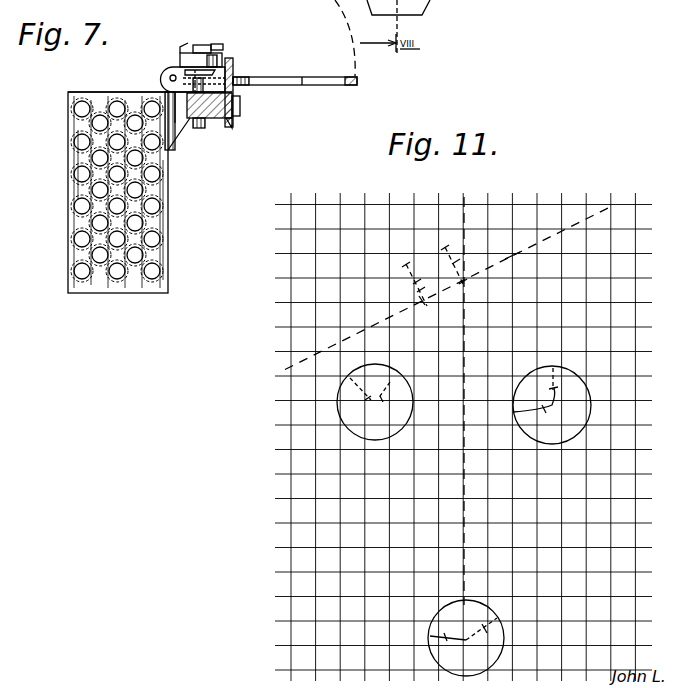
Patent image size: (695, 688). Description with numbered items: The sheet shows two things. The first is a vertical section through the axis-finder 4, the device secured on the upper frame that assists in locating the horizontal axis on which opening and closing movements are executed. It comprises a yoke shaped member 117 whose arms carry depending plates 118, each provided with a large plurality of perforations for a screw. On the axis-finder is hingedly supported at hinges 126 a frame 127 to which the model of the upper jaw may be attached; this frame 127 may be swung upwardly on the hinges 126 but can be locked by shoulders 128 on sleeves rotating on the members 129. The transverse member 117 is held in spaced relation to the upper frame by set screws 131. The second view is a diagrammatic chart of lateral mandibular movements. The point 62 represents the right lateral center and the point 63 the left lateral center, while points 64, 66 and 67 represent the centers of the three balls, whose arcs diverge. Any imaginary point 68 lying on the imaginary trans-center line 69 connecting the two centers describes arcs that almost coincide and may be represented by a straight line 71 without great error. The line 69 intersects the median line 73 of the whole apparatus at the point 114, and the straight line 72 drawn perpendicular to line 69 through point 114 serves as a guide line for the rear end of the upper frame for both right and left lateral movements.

In FIG. 7, the axis-finder 4 is at (170, 196).
In FIG. 7, the plates 118 is at (98, 176).
In FIG. 7, the yoke shaped member 117 is at (240, 105).
In FIG. 7, the hinges 126 is at (166, 74).
In FIG. 7, the shoulders 128 is at (192, 49).
In FIG. 7, the members 129 is at (200, 44).
In FIG. 7, the set screws 131 is at (233, 62).
In FIG. 7, the frame 127 is at (258, 77).
In FIG. 11, the right lateral center 62 is at (320, 359).
In FIG. 11, the left lateral center 63 is at (510, 257).
In FIG. 11, the ball center 64 is at (466, 640).
In FIG. 11, the ball center 66 is at (375, 402).
In FIG. 11, the ball center 67 is at (552, 405).
In FIG. 11, the imaginary point 68 is at (424, 300).
In FIG. 11, the trans-center line 69 is at (387, 319).
In FIG. 11, the straight line 71 is at (414, 289).
In FIG. 11, the guide line 72 is at (457, 270).
In FIG. 11, the median line 73 is at (464, 352).
In FIG. 11, the intersection point 114 is at (463, 286).